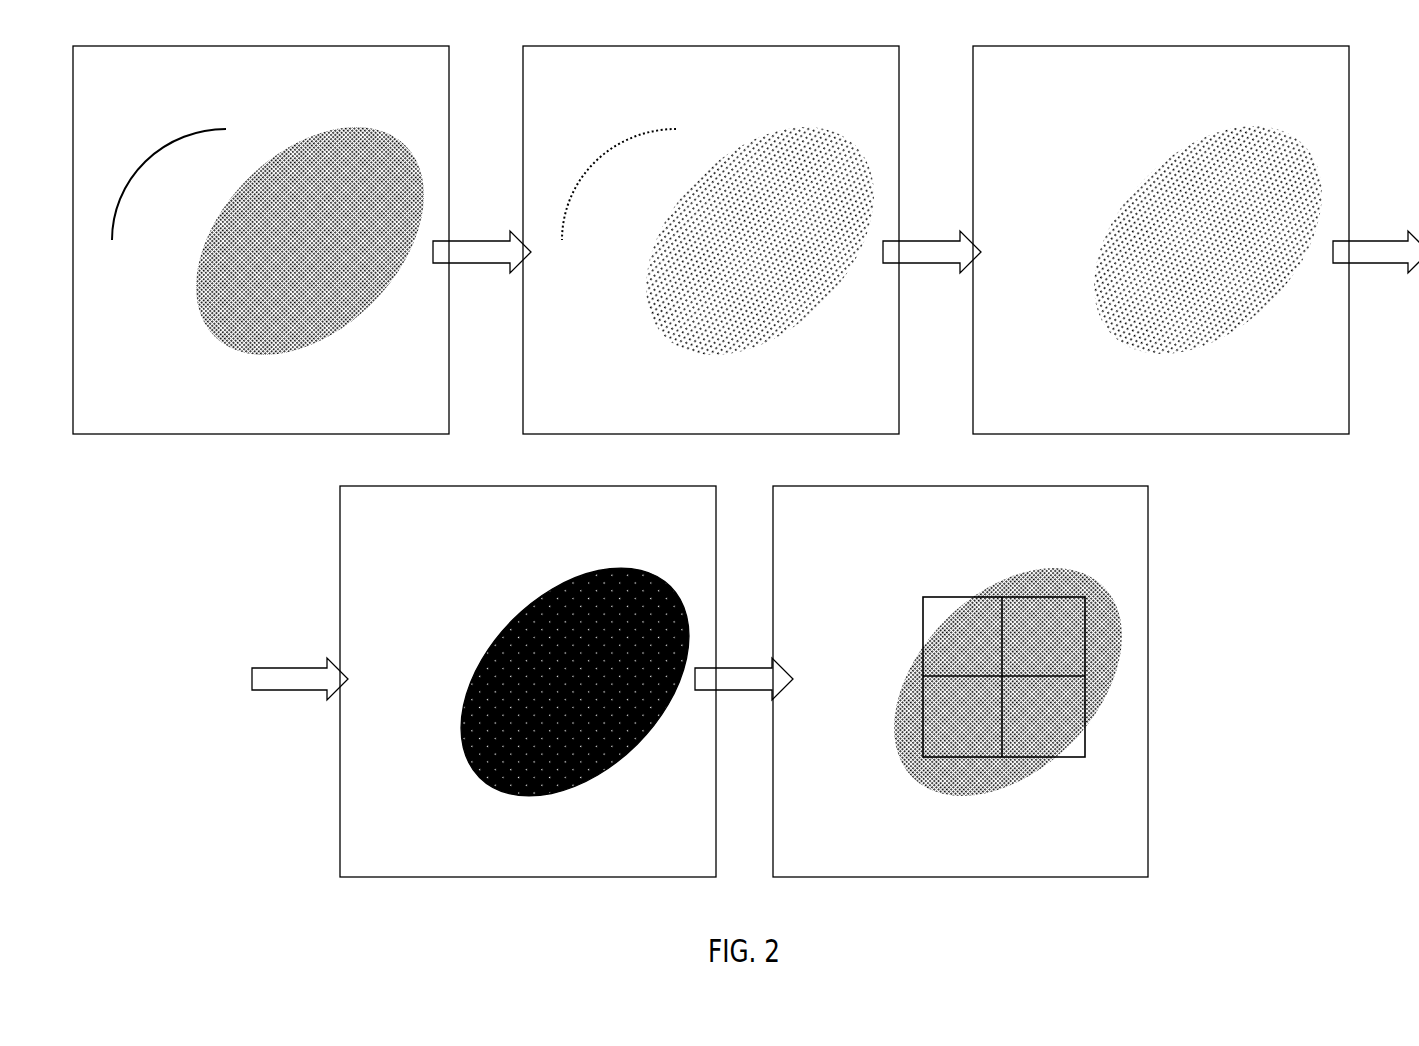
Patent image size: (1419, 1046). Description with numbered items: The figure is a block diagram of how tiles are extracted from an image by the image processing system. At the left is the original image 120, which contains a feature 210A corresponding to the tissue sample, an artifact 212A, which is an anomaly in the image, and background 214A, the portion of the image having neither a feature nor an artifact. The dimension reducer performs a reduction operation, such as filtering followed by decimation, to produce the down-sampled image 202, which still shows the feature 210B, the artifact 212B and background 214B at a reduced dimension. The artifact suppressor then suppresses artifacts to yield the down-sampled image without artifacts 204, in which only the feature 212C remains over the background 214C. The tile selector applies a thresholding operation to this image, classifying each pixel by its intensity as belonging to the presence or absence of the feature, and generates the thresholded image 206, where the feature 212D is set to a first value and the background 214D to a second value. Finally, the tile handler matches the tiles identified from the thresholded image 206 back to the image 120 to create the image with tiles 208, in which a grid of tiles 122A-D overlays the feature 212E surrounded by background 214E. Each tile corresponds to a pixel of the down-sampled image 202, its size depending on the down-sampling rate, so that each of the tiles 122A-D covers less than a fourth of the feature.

The image 120 is at (270, 240).
The down-sampled image 202 is at (720, 240).
The down-sampled image without artifacts 204 is at (1169, 240).
The thresholded image 206 is at (536, 681).
The image with tiles 208 is at (969, 681).
The artifact 212A is at (148, 162).
The artifact 212B is at (595, 162).
The feature 212C is at (1115, 220).
The feature 212D is at (487, 647).
The feature 212E is at (992, 780).
The feature 210A is at (203, 320).
The feature 210B is at (650, 312).
The background 214A is at (307, 77).
The background 214B is at (827, 76).
The background 214C is at (1177, 102).
The background 214D is at (632, 517).
The background 214E is at (1052, 518).
The tiles 122A-D is at (923, 629).